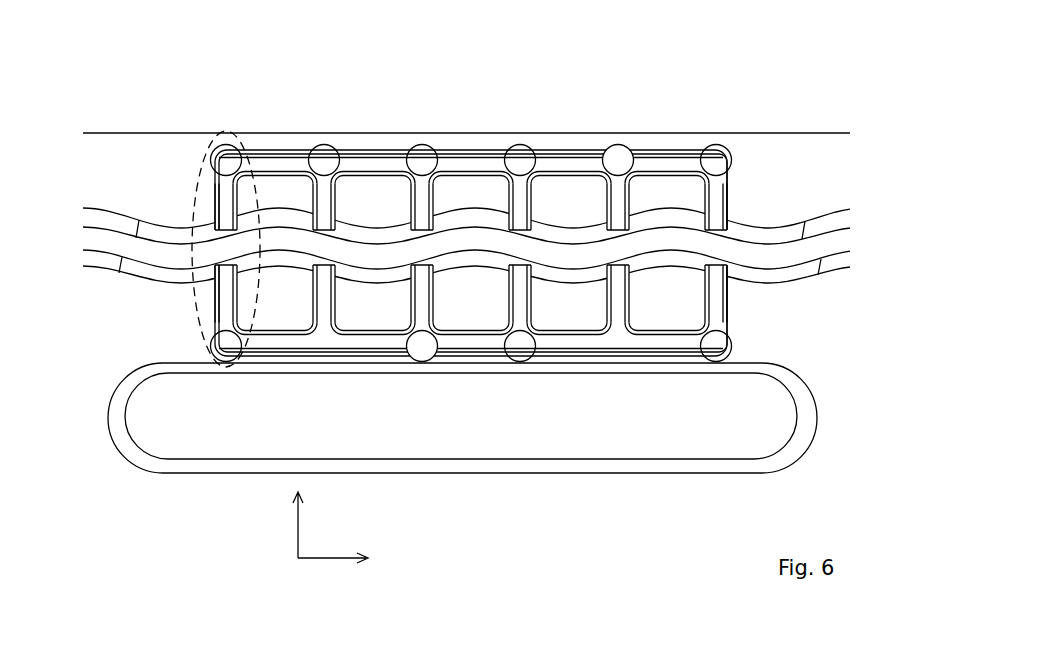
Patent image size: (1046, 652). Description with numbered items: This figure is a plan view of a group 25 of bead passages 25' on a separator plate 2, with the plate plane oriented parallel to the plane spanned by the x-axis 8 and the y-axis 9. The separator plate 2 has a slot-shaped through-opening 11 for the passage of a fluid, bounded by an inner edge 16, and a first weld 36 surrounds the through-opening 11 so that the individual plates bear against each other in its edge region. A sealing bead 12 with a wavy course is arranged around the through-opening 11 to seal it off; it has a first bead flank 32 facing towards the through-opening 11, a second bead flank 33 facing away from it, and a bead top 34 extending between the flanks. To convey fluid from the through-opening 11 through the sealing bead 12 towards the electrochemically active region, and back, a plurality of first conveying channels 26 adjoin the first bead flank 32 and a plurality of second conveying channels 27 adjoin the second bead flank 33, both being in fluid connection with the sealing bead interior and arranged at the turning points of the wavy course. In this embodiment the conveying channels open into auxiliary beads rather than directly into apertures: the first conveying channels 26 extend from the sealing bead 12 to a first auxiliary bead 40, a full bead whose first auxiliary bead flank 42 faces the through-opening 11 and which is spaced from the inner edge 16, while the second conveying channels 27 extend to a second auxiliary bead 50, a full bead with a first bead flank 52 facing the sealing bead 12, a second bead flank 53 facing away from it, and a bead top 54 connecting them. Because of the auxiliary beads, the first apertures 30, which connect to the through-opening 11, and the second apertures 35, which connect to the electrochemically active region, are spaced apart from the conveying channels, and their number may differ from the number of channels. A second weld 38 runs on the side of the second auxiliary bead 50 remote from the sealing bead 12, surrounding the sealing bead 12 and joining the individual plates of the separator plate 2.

The separator plate 2 is at (737, 105).
The x-axis 8 is at (297, 513).
The y-axis 9 is at (310, 560).
The through-opening 11 is at (468, 423).
The sealing bead 12 is at (788, 260).
The inner edge 16 is at (637, 460).
The group of bead passages 25 is at (566, 71).
The bead passage 25' is at (204, 225).
The first conveying channel 26 is at (227, 290).
The second conveying channel 27 is at (419, 202).
The first aperture 30 is at (423, 343).
The first bead flank 32 is at (841, 260).
The second bead flank 33 is at (130, 222).
The bead top 34 is at (118, 247).
The second aperture 35 is at (618, 158).
The first weld 36 is at (815, 405).
The second weld 38 is at (305, 132).
The first auxiliary bead 40 is at (672, 344).
The first auxiliary bead flank 42 is at (563, 353).
The second auxiliary bead 50 is at (278, 163).
The first bead flank of the second auxiliary bead 52 is at (470, 174).
The second bead flank of the second auxiliary bead 53 is at (483, 149).
The bead top of the second auxiliary bead 54 is at (466, 156).